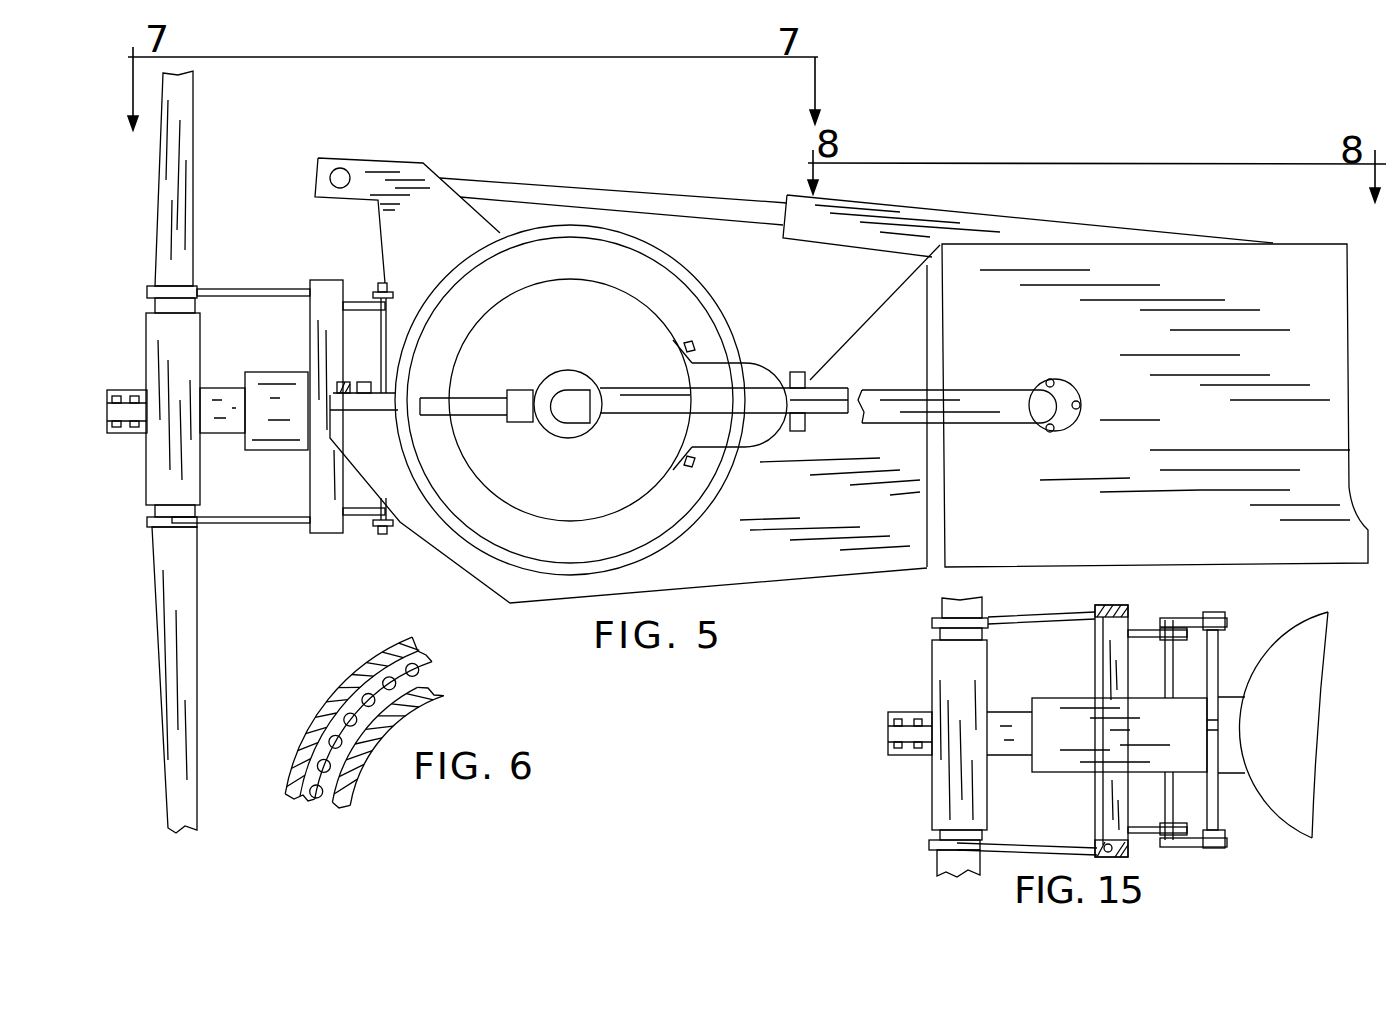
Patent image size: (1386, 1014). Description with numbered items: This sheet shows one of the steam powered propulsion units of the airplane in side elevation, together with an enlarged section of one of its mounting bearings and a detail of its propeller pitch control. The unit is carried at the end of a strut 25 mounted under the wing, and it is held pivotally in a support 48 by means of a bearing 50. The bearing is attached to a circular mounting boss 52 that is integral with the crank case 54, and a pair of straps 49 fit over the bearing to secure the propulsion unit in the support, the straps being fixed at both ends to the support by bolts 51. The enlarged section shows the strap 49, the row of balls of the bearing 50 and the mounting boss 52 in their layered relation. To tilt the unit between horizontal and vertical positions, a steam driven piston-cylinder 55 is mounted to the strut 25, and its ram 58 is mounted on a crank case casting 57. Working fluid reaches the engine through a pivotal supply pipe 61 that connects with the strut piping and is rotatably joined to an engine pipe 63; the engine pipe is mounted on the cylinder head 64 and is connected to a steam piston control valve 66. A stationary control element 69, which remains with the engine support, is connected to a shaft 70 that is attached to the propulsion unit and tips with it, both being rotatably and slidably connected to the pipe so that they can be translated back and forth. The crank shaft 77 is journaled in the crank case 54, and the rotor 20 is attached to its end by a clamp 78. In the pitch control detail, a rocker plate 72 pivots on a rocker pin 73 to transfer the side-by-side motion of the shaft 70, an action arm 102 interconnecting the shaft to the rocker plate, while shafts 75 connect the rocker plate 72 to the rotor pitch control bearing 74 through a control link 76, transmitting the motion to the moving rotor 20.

In FIG. 5, the rotor 20 is at (186, 108).
In FIG. 15, the rotor 20 is at (975, 775).
In FIG. 5, the strut 25 is at (1273, 257).
In FIG. 5, the support 48 is at (777, 572).
In FIG. 5, the strap 49 is at (655, 255).
In FIG. 6, the strap 49 is at (378, 668).
In FIG. 5, the bearing 50 is at (503, 556).
In FIG. 6, the bearing 50 is at (352, 698).
In FIG. 5, the bolt 51 is at (345, 386).
In FIG. 5, the circular mounting boss 52 is at (648, 528).
In FIG. 6, the circular mounting boss 52 is at (400, 724).
In FIG. 5, the crank case 54 is at (262, 396).
In FIG. 15, the crank case 54 is at (1085, 760).
In FIG. 5, the steam driven piston-cylinder 55 is at (937, 235).
In FIG. 5, the crank case casting 57 is at (412, 172).
In FIG. 5, the ram 58 is at (490, 191).
In FIG. 5, the pivotal supply pipe 61 is at (568, 408).
In FIG. 5, the engine pipe 63 is at (660, 394).
In FIG. 5, the head 64 is at (598, 320).
In FIG. 5, the steam piston control valve 66 is at (752, 352).
In FIG. 5, the stationary control element 69 is at (765, 398).
In FIG. 5, the shaft 70 is at (505, 404).
In FIG. 15, the shaft 70 is at (1207, 730).
In FIG. 5, the rocker plate 72 is at (391, 296).
In FIG. 15, the rocker plate 72 is at (1185, 618).
In FIG. 5, the rocker pin 73 is at (383, 325).
In FIG. 15, the rocker pin 73 is at (1168, 677).
In FIG. 5, the rotor pitch control bearing 74 is at (318, 522).
In FIG. 15, the rotor pitch control bearing 74 is at (1120, 803).
In FIG. 5, the shaft 75 is at (349, 300).
In FIG. 15, the shaft 75 is at (1138, 630).
In FIG. 5, the control link 76 is at (206, 295).
In FIG. 15, the control link 76 is at (1012, 618).
In FIG. 15, the crank shaft 77 is at (990, 730).
In FIG. 5, the clamp 78 is at (131, 414).
In FIG. 15, the clamp 78 is at (895, 740).
In FIG. 15, the action arm 102 is at (1214, 650).